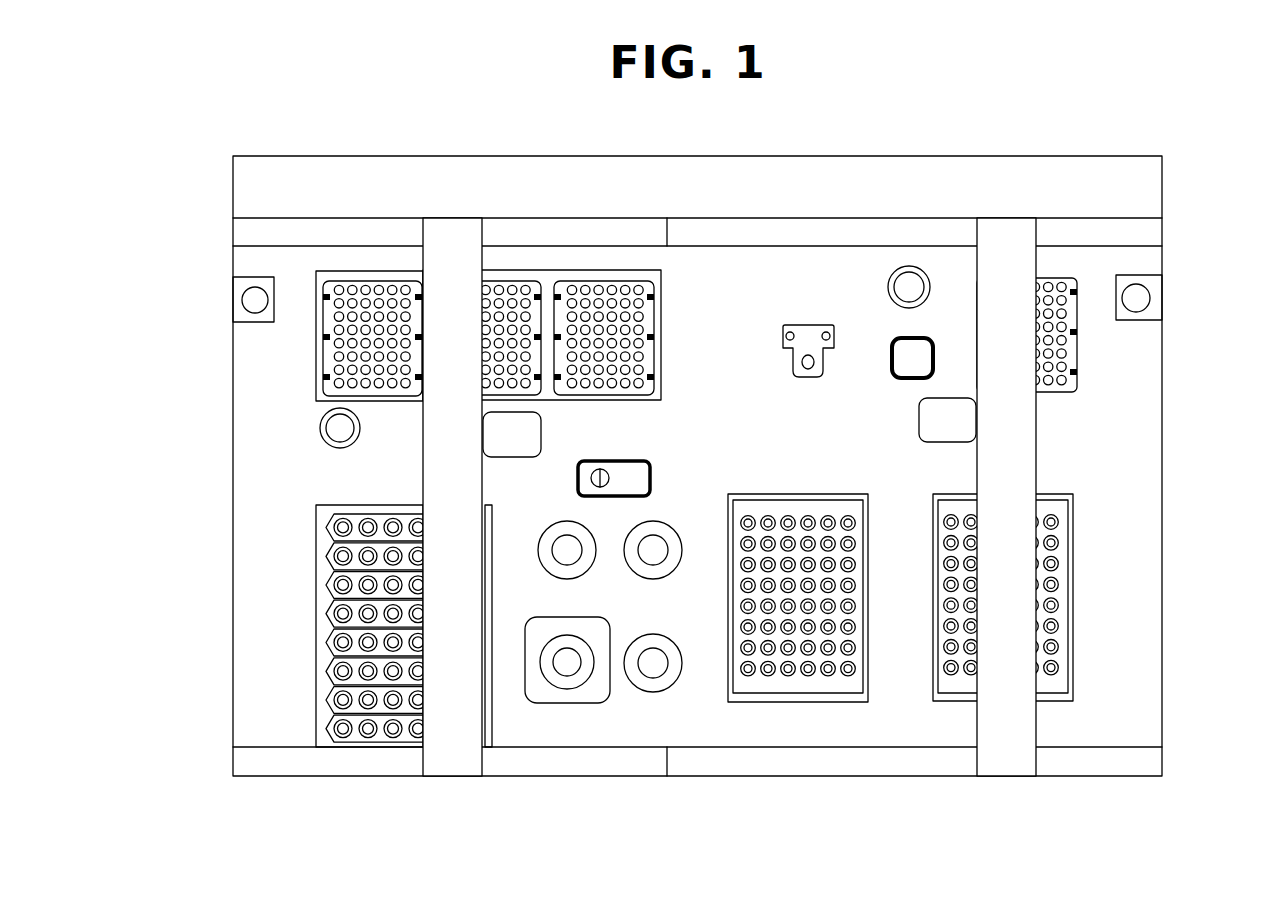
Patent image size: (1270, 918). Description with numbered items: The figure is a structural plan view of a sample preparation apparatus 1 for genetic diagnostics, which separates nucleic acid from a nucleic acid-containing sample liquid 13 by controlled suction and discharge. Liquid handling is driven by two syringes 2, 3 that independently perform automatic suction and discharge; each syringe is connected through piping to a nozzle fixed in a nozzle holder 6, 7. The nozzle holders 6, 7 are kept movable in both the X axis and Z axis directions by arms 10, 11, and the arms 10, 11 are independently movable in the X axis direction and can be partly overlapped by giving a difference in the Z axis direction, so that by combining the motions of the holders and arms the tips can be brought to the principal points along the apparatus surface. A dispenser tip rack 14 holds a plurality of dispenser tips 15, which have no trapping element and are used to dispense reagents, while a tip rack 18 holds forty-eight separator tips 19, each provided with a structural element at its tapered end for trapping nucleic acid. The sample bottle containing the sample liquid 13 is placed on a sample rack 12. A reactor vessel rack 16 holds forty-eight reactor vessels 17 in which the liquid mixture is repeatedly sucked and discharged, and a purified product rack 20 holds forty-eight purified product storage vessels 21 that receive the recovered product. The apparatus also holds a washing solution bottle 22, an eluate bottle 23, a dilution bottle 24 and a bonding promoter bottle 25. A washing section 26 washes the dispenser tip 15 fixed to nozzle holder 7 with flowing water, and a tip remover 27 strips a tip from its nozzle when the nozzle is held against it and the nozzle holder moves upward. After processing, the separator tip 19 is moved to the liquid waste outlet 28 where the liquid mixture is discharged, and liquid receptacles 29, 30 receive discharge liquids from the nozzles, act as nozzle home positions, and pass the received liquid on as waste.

The sample preparation apparatus 1 is at (499, 786).
The syringe 2 is at (1137, 296).
The syringe 3 is at (240, 298).
The nozzle holder 6 is at (950, 427).
The nozzle holder 7 is at (490, 440).
The arm 10 is at (1008, 765).
The arm 11 is at (455, 765).
The sample rack 12 is at (327, 743).
The sample liquid 13 is at (340, 527).
The dispenser tip rack 14 is at (328, 288).
The dispenser tip 15 is at (340, 290).
The reactor vessel rack 16 is at (855, 687).
The reactor vessel 17 is at (748, 523).
The tip rack 18 is at (1070, 282).
The separator tip 19 is at (1058, 284).
The purified product rack 20 is at (1063, 687).
The purified product storage vessel 21 is at (958, 520).
The washing solution bottle 22 is at (573, 697).
The eluate bottle 23 is at (552, 567).
The dilution bottle 24 is at (647, 682).
The bonding promoter bottle 25 is at (663, 567).
The washing section 26 is at (635, 473).
The tip remover 27 is at (809, 330).
The liquid waste outlet 28 is at (904, 357).
The liquid receptacle 29 is at (912, 282).
The liquid receptacle 30 is at (327, 427).